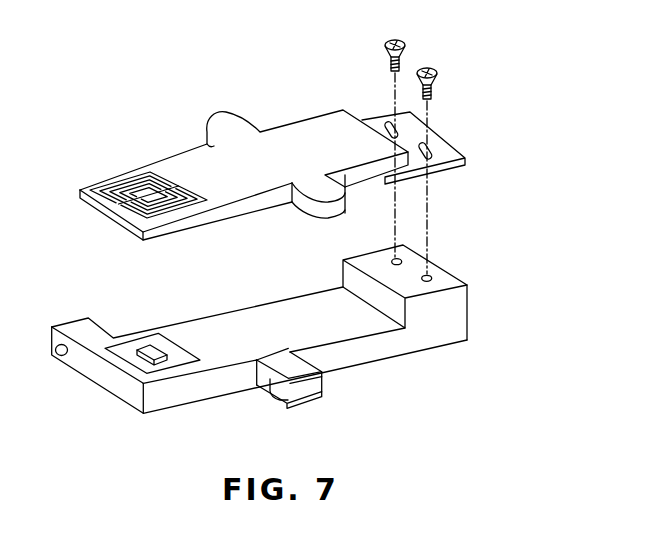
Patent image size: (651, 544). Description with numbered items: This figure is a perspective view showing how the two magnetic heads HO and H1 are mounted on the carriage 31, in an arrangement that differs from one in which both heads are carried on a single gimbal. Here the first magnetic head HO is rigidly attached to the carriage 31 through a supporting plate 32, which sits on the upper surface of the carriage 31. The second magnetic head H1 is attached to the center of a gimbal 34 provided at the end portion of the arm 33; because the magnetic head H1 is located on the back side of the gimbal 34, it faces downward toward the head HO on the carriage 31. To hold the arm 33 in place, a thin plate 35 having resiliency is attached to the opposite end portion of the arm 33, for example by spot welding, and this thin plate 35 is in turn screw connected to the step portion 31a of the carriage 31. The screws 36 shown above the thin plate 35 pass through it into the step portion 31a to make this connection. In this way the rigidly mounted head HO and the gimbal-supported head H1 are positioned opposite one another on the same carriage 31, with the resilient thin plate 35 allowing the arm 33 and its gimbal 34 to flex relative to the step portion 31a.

The carriage 31 is at (411, 338).
The step portion 31a is at (457, 315).
The supporting plate 32 is at (138, 362).
The arm 33 is at (289, 135).
The gimbal 34 is at (125, 181).
The thin plate 35 is at (452, 167).
The screws 36 is at (402, 44).
The magnetic head H1 is at (131, 208).
The magnetic head HO is at (150, 344).